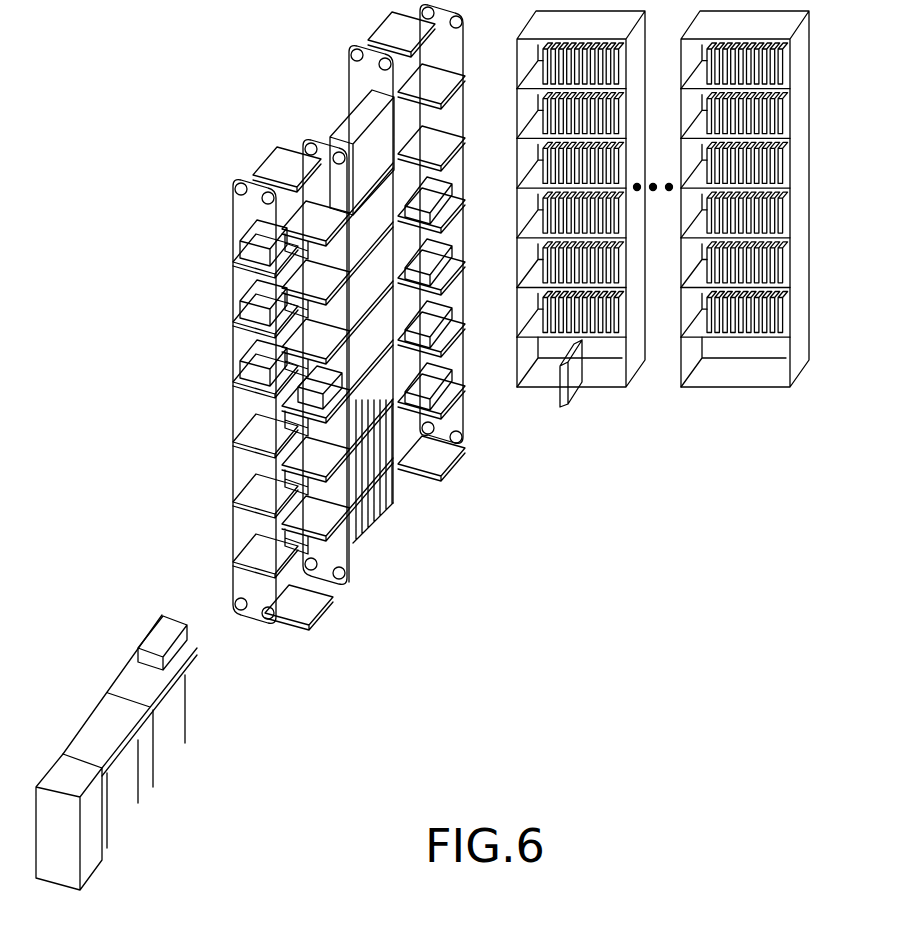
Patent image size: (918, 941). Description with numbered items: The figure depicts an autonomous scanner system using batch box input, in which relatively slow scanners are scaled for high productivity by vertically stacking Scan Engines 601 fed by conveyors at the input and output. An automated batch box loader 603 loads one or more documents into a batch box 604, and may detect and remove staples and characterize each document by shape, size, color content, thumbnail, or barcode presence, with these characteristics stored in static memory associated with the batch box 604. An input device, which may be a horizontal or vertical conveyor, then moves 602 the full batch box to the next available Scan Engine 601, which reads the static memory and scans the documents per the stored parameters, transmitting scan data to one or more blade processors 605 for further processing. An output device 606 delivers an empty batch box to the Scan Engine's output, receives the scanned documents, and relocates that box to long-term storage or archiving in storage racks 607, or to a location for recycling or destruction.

The Scan Engine 601 is at (333, 133).
The input device movement of full batch box 602 is at (212, 340).
The automated batch box loader 603 is at (93, 713).
The batch box 604 is at (177, 643).
The blade processor 605 is at (375, 533).
The output device 606 is at (472, 470).
The storage rack 607 is at (612, 387).